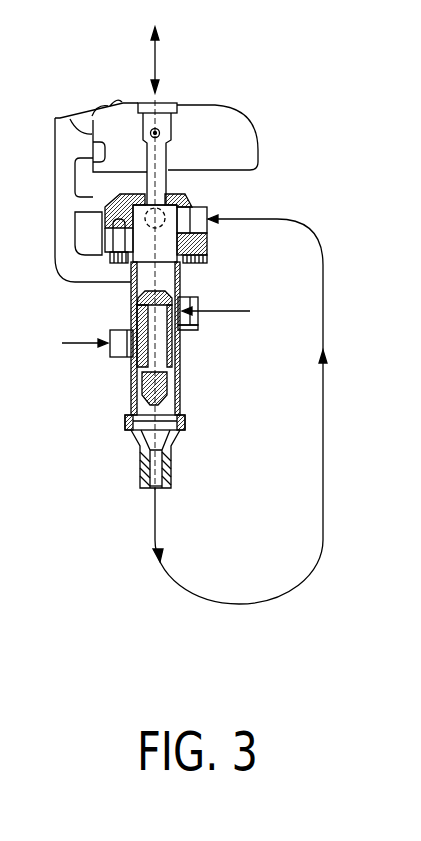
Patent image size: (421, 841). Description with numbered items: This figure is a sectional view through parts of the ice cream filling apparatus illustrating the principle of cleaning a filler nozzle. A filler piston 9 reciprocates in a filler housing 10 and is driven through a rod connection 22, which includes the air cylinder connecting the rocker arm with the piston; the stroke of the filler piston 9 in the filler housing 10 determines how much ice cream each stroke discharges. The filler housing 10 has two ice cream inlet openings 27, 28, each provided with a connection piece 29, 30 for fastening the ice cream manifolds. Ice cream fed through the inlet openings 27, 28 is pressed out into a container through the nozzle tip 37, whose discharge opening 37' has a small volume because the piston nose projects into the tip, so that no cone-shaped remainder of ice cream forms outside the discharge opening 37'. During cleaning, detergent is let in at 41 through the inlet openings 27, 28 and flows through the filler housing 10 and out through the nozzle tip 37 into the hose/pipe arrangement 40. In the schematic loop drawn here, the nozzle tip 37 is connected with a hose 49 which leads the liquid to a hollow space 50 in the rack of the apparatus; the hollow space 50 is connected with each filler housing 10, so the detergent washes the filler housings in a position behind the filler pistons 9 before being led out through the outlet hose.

The filler piston 9 is at (130, 392).
The filler housing 10 is at (181, 392).
The rod connection 22 is at (168, 162).
The ice cream inlet opening 27 is at (199, 321).
The ice cream inlet opening 28 is at (117, 355).
The connection piece 29 is at (190, 326).
The connection piece 30 is at (123, 355).
The nozzle tip 37 is at (178, 451).
The discharge opening 37' is at (190, 506).
The hose/pipe arrangement 40 is at (336, 504).
The detergent inlet 41 is at (60, 342).
The hose 49 is at (325, 266).
The hollow space 50 is at (163, 215).